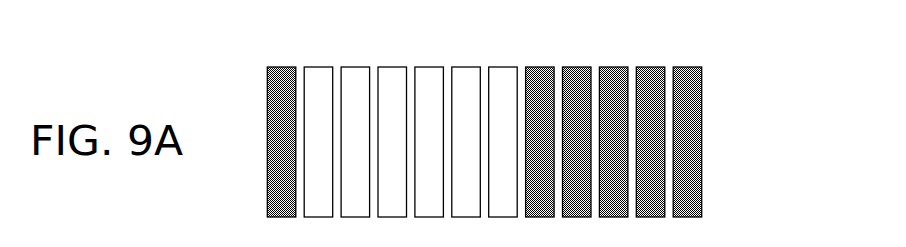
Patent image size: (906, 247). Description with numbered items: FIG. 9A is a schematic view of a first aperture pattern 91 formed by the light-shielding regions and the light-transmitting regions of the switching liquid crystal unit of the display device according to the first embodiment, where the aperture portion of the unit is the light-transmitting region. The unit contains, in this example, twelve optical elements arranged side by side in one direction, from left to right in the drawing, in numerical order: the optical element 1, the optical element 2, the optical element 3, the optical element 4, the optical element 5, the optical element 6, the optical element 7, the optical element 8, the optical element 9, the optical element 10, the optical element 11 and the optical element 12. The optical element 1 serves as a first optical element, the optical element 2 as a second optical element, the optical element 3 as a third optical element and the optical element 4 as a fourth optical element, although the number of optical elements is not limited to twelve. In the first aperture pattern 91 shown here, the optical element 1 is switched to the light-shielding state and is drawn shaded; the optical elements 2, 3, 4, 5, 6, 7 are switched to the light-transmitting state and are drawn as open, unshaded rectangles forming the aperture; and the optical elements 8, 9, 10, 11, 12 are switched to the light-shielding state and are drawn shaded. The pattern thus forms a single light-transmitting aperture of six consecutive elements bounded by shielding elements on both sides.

The first aperture pattern 91 is at (741, 119).
The optical element 1 is at (281, 142).
The optical element 2 is at (318, 142).
The optical element 3 is at (355, 142).
The optical element 4 is at (392, 142).
The optical element 5 is at (429, 142).
The optical element 6 is at (466, 142).
The optical element 7 is at (503, 142).
The optical element 8 is at (540, 142).
The optical element 9 is at (577, 142).
The optical element 10 is at (613, 142).
The optical element 11 is at (650, 142).
The optical element 12 is at (687, 142).